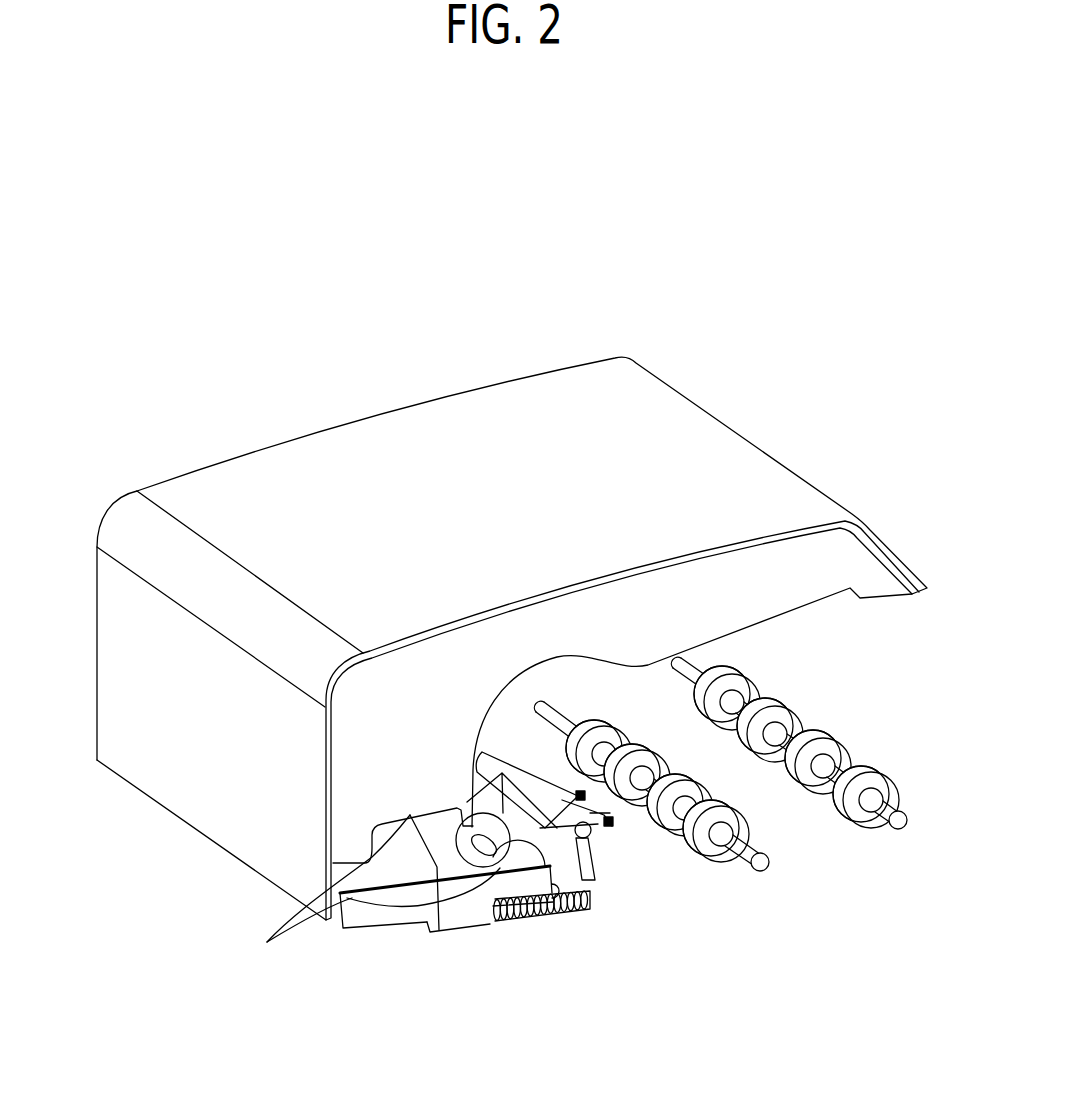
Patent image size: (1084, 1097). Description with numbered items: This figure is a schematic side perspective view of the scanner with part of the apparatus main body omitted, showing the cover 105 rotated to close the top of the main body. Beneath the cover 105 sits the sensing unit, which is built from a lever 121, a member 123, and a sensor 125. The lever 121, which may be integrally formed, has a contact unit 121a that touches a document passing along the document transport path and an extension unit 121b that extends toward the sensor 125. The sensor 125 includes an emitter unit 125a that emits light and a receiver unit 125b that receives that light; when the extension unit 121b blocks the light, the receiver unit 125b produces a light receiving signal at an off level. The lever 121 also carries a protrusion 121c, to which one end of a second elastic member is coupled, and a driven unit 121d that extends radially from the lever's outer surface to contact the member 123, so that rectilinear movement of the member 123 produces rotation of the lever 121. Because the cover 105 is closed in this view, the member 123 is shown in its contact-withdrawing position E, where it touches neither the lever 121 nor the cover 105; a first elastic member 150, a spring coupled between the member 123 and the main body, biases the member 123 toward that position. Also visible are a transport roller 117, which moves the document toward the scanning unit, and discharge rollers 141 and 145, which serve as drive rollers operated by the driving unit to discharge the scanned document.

The cover 105 is at (747, 440).
The transport roller 117 is at (317, 888).
The lever 121 is at (519, 885).
The contact unit 121a is at (430, 932).
The extension unit 121b is at (614, 826).
The protrusion 121c is at (483, 900).
The driven unit 121d is at (593, 880).
The member 123 is at (352, 932).
The contact-withdrawing position E is at (392, 923).
The sensor 125 is at (553, 646).
The emitter unit 125a is at (608, 822).
The receiver unit 125b is at (580, 795).
The discharge roller 141 is at (728, 868).
The discharge roller 145 is at (863, 832).
The first elastic member 150 is at (553, 915).